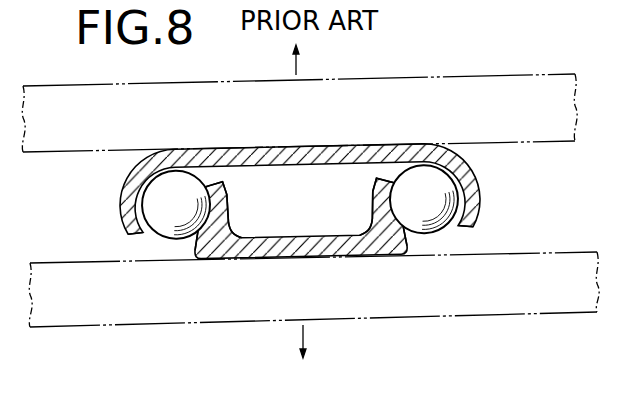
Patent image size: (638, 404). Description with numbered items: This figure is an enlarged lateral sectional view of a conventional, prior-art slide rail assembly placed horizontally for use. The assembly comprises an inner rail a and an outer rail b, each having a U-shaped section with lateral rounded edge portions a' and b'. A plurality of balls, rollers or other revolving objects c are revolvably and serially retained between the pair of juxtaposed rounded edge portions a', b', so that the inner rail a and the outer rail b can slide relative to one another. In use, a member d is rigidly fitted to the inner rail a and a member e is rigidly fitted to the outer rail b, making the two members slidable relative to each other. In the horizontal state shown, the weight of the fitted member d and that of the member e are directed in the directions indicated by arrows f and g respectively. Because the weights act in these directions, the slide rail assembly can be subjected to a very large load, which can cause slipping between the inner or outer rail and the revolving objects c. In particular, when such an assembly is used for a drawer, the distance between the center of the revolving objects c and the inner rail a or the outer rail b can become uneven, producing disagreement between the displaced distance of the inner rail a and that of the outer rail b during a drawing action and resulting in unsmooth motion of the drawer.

The inner rail a is at (300, 235).
The lateral rounded edge portions of the inner rail a' is at (300, 214).
The outer rail b is at (300, 171).
The lateral rounded edge portions of the outer rail b' is at (307, 213).
The revolving objects c is at (165, 243).
The fitted member d is at (402, 307).
The fitted member e is at (428, 93).
The arrow f is at (311, 345).
The arrow g is at (305, 52).